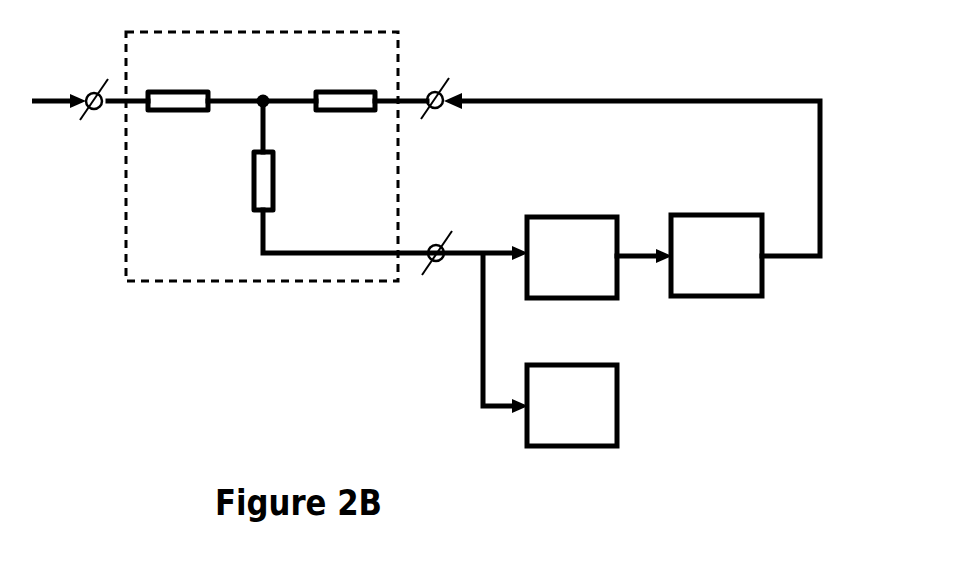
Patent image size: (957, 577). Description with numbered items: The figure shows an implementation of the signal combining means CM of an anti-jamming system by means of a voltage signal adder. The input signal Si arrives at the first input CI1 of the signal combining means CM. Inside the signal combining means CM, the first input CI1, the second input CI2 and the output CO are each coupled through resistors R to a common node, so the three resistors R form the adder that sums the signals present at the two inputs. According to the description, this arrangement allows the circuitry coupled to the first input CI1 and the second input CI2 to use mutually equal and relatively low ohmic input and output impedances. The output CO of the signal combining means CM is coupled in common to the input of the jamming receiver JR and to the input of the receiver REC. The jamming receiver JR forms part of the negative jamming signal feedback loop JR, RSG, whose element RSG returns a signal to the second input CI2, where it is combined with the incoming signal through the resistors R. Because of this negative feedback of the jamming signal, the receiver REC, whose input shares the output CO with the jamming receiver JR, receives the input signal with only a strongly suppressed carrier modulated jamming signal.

The input signal Si is at (55, 89).
The first input CI1 is at (91, 85).
The signal combining means CM is at (262, 140).
The resistor R is at (261, 136).
The second input CI2 is at (446, 79).
The output CO is at (442, 235).
The jamming receiver JR is at (564, 243).
The negative jamming signal feedback loop element RSG is at (709, 241).
The receiver REC is at (598, 405).